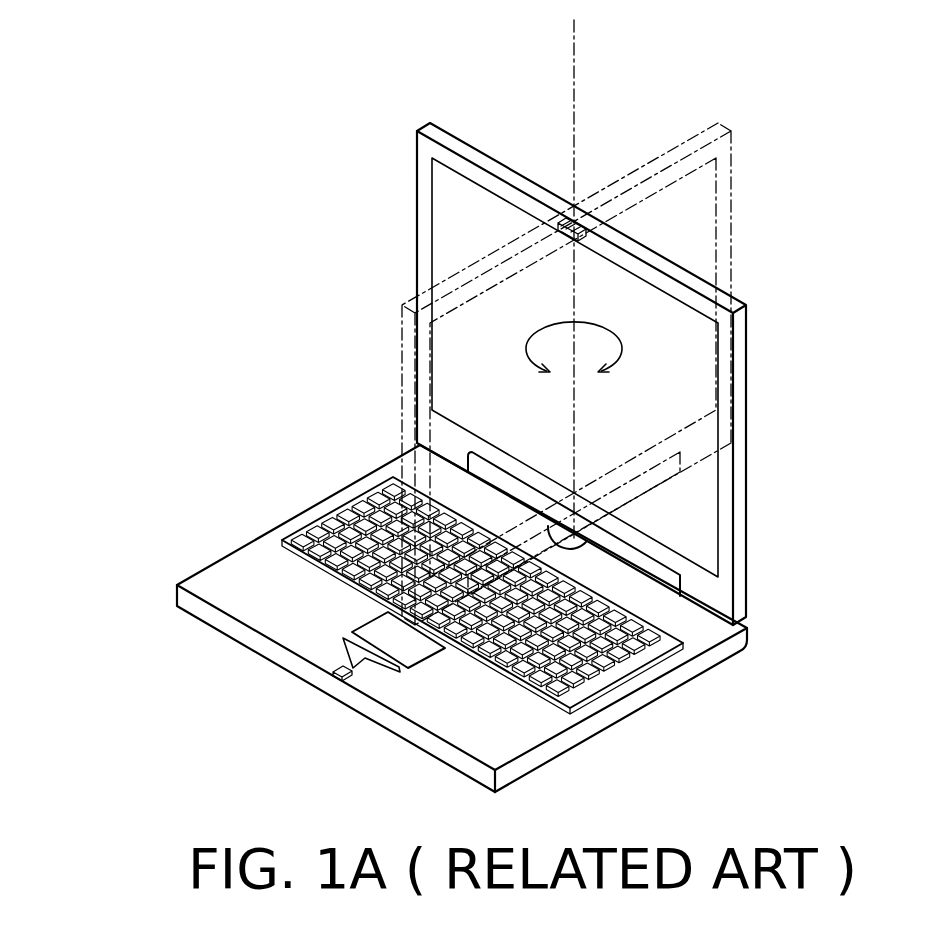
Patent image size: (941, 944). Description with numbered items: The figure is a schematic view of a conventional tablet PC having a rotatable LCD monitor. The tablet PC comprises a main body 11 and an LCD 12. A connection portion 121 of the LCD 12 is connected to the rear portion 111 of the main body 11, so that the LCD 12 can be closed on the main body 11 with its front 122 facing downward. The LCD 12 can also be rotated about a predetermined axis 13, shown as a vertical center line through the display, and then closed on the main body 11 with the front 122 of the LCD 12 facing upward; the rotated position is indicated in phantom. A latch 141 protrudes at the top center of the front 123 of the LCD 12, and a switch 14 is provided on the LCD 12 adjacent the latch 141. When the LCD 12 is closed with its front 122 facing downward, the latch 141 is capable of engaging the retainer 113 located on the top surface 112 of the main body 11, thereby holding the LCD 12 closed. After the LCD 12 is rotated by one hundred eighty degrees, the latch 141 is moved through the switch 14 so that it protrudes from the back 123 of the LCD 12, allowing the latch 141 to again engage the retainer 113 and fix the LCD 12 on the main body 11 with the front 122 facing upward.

The main body 11 is at (587, 746).
The rear portion 111 is at (749, 633).
The top surface 112 is at (232, 568).
The retainer 113 is at (330, 669).
The LCD 12 is at (765, 450).
The connection portion 121 is at (749, 610).
The front 122 is at (448, 226).
The front 123 is at (471, 147).
The predetermined axis 13 is at (577, 38).
The switch 14 is at (586, 210).
The latch 141 is at (569, 213).